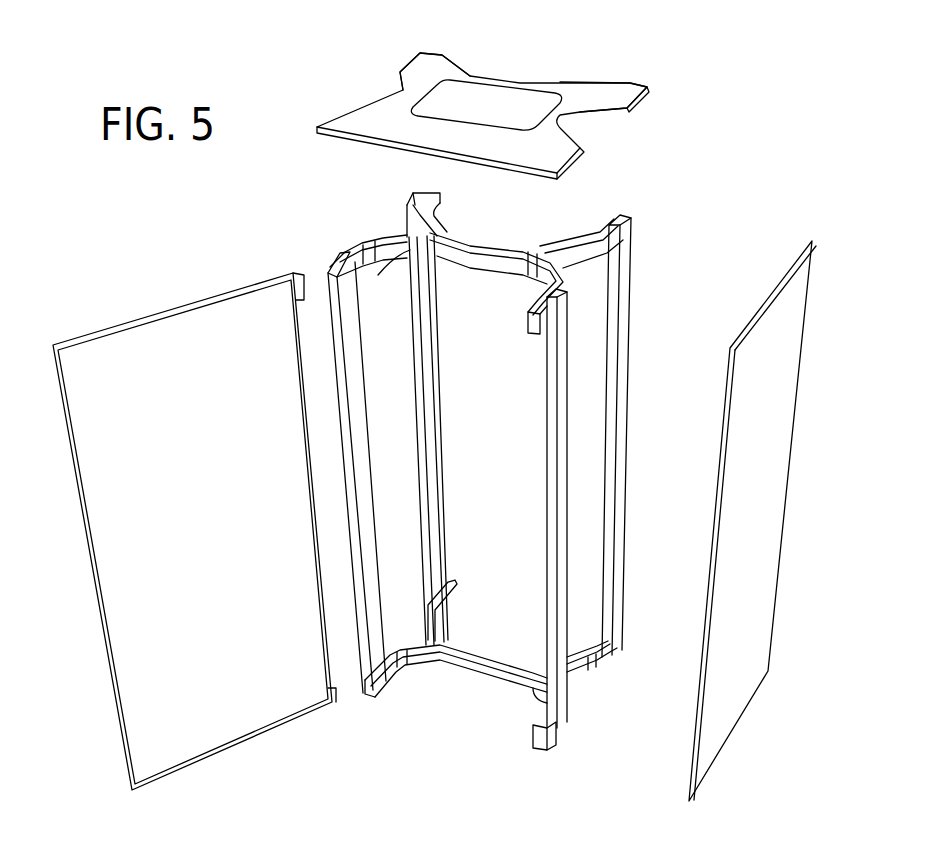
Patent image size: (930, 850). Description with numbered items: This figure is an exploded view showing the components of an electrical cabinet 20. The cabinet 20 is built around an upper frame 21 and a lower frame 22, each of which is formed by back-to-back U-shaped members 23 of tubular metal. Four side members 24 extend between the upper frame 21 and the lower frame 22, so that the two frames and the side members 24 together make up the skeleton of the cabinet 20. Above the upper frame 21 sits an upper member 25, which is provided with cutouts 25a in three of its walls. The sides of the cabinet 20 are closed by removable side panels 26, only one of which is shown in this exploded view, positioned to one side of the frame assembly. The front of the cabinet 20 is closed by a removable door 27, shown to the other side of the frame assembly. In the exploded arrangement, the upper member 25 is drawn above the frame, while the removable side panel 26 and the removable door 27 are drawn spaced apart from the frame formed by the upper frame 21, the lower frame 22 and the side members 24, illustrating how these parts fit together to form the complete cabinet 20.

The electrical cabinet 20 is at (688, 179).
The upper frame 21 is at (517, 238).
The lower frame 22 is at (494, 680).
The U-shaped members 23 is at (440, 208).
The side members 24 is at (433, 340).
The upper member 25 is at (478, 113).
The cutouts 25a is at (381, 94).
The removable side panels 26 is at (770, 550).
The removable door 27 is at (117, 590).